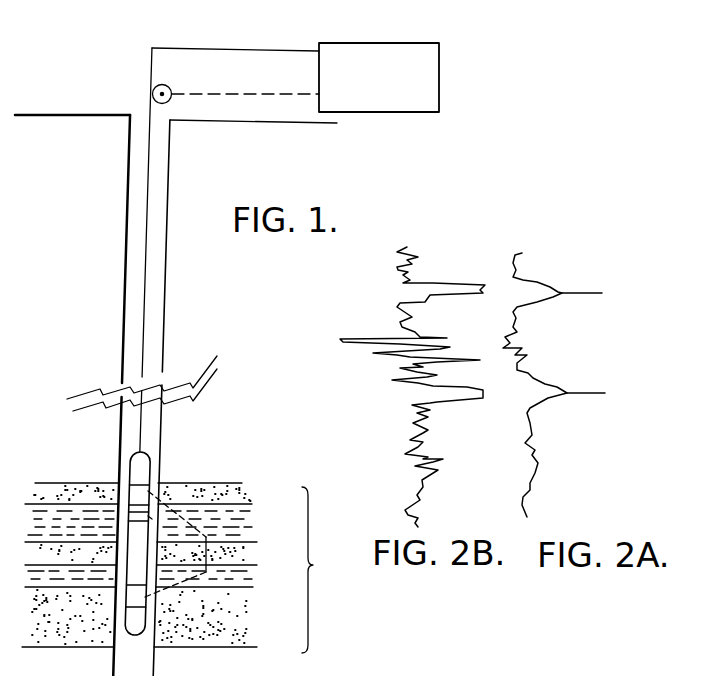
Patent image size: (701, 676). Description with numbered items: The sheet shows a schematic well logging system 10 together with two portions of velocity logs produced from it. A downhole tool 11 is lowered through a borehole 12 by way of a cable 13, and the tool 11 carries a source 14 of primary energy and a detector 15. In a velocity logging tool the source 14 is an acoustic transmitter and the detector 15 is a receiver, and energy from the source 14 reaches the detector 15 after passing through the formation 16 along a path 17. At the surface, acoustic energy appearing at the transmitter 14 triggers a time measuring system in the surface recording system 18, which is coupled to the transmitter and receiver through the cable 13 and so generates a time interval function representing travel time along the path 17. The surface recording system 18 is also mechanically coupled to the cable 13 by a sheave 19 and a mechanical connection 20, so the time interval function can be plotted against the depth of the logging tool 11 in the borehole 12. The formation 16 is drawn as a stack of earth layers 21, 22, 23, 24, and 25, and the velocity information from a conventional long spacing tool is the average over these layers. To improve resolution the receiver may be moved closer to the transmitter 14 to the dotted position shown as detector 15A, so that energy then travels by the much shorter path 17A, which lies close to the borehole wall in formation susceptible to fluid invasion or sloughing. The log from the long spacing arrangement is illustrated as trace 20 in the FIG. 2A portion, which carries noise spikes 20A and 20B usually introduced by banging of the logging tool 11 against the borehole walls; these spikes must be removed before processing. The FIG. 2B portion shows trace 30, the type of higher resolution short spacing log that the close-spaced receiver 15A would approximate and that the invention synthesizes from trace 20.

In FIG. 1, the well logging system 10 is at (163, 28).
In FIG. 1, the downhole tool 11 is at (163, 459).
In FIG. 1, the borehole 12 is at (174, 283).
In FIG. 1, the cable 13 is at (155, 201).
In FIG. 1, the source 14 is at (158, 490).
In FIG. 1, the detector 15 is at (155, 598).
In FIG. 1, the detector 15A is at (171, 521).
In FIG. 1, the formation 16 is at (324, 570).
In FIG. 1, the path 17 is at (210, 535).
In FIG. 1, the path 17A is at (150, 518).
In FIG. 1, the surface recording system 18 is at (357, 43).
In FIG. 1, the sheave 19 is at (168, 86).
In FIG. 1, the mechanical connection 20 is at (240, 97).
In FIG. 2A, the mechanical connection 20 is at (532, 493).
In FIG. 2A, the noise spike 20A is at (564, 295).
In FIG. 2A, the noise spike 20B is at (578, 391).
In FIG. 1, the earth layer 21 is at (151, 496).
In FIG. 1, the earth layer 22 is at (155, 530).
In FIG. 1, the earth layer 23 is at (148, 560).
In FIG. 1, the earth layer 24 is at (155, 586).
In FIG. 1, the earth layer 25 is at (155, 618).
In FIG. 2B, the trace 30 is at (423, 491).